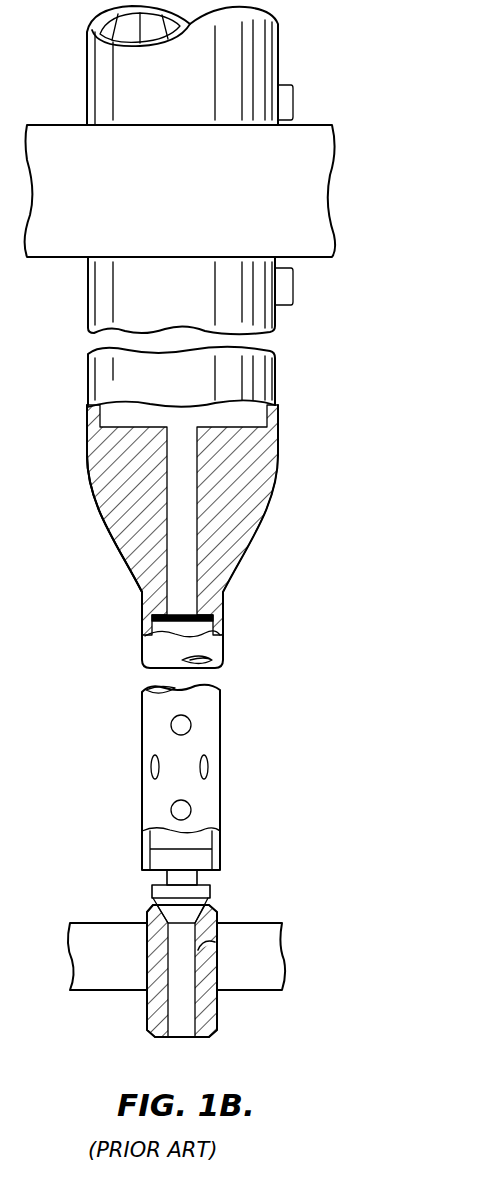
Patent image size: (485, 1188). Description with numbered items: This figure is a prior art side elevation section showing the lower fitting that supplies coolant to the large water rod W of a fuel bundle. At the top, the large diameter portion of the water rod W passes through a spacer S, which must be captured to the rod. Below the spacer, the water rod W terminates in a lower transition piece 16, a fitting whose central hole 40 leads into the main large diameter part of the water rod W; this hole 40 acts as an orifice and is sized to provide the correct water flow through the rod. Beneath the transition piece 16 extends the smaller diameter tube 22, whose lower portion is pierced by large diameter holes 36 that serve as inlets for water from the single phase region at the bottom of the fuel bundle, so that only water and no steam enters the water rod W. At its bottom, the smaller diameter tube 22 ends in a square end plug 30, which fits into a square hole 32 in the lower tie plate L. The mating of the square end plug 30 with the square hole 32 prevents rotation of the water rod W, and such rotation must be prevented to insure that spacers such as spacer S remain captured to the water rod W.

The spacer S is at (198, 214).
The water rod W is at (280, 379).
The lower transition piece 16 is at (270, 492).
The central hole 40 is at (106, 499).
The smaller diameter tube 22 is at (220, 711).
The large diameter holes 36 is at (186, 812).
The square end plug 30 is at (219, 915).
The square hole 32 is at (204, 952).
The lower tie plate L is at (97, 923).